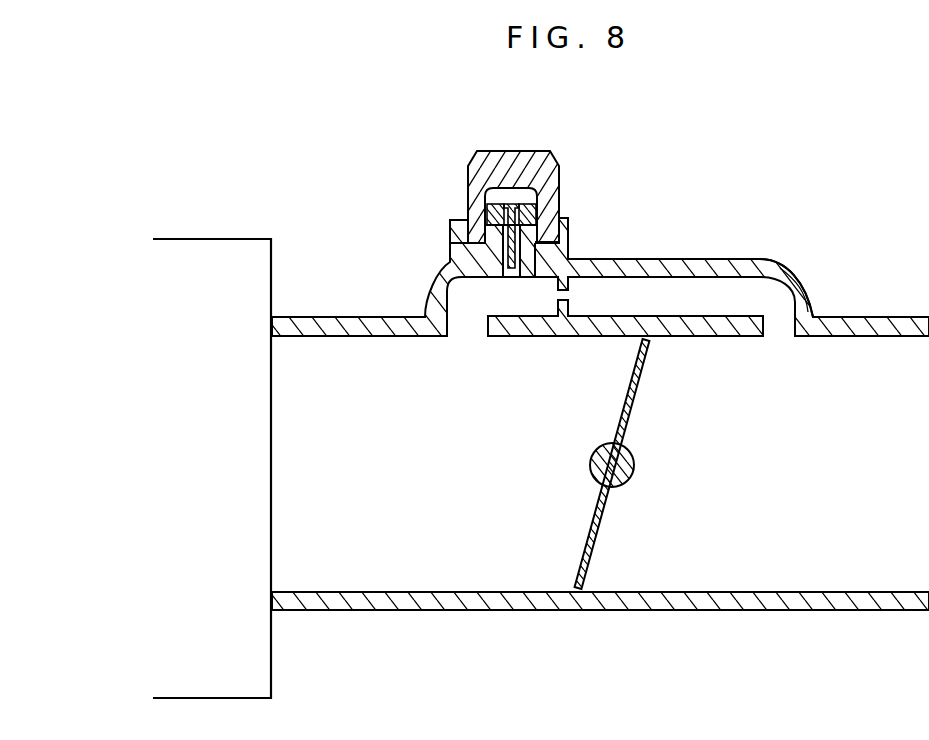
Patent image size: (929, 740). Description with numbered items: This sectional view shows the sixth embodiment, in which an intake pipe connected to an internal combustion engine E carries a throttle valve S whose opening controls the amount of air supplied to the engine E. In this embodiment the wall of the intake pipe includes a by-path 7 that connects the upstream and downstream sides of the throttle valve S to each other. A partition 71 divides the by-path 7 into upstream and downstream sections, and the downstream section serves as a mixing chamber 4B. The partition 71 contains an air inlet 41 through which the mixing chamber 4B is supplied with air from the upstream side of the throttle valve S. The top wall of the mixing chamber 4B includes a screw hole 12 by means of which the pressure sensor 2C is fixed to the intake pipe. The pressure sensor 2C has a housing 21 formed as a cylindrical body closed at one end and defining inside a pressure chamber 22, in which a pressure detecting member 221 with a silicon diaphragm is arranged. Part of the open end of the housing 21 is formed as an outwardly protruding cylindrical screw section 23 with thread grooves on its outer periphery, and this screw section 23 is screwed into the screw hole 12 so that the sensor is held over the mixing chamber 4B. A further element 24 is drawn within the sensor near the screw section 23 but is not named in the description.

The cap assembly 2C is at (509, 176).
The housing 21 is at (515, 150).
The pressure chamber 22 is at (495, 195).
The pressure detecting member 221 is at (525, 205).
The screw hole 12 is at (558, 272).
The pin 24 is at (511, 267).
The screw section 23 is at (496, 265).
The partition 71 is at (570, 293).
The air inlet 41 is at (571, 299).
The by-path 7 is at (700, 288).
The mixing chamber 4B is at (464, 297).
The throttle valve S is at (590, 553).
The internal combustion engine E is at (270, 648).